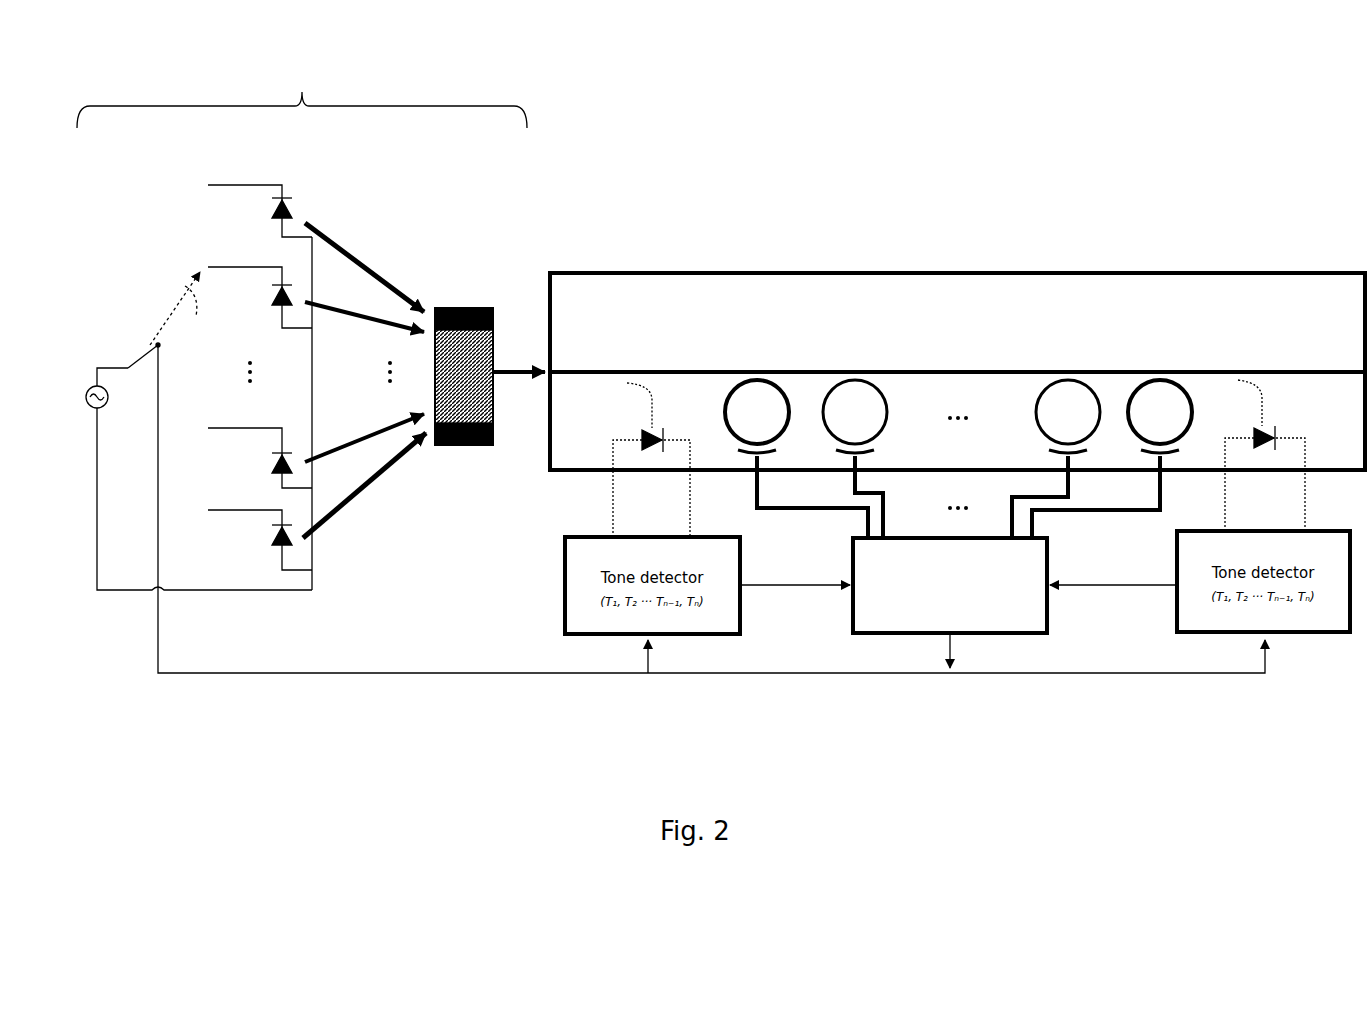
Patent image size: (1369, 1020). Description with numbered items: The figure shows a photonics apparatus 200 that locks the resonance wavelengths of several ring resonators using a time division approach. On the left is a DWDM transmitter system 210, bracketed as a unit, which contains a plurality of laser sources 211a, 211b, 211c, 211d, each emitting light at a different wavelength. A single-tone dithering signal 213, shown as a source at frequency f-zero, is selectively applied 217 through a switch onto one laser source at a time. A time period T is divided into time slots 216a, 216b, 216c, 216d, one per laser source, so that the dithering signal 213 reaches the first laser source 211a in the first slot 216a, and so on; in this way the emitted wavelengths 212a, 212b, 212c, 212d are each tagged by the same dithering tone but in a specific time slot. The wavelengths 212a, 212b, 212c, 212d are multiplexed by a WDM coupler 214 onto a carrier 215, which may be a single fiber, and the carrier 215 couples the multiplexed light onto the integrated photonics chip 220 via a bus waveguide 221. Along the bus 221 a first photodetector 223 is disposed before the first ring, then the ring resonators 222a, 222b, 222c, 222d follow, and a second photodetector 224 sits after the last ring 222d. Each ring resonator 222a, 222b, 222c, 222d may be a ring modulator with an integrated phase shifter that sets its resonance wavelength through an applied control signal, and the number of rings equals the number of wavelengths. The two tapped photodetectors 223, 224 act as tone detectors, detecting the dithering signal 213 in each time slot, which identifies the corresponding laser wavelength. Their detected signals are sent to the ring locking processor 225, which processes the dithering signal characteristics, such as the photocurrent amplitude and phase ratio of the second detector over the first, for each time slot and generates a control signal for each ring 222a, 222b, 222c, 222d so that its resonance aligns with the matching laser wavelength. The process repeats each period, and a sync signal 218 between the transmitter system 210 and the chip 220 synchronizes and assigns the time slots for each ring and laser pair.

The photonics apparatus 200 is at (1038, 92).
The DWDM transmitter system 210 is at (302, 90).
The laser source 211a is at (290, 210).
The laser source 211b is at (288, 302).
The laser source 211c is at (288, 468).
The laser source 211d is at (290, 540).
The wavelength 212a is at (340, 252).
The wavelength 212b is at (338, 320).
The wavelength 212c is at (370, 443).
The wavelength 212d is at (352, 507).
The dithering signal 213 is at (88, 388).
The WDM coupler 214 is at (470, 308).
The carrier 215 is at (515, 368).
The time slot 216a is at (210, 180).
The time slot 216b is at (210, 265).
The time slot 216c is at (210, 426).
The time slot 216d is at (210, 508).
The selective application of dithering signal 217 is at (166, 320).
The sync signal 218 is at (473, 674).
The integrated photonics chip 220 is at (833, 271).
The bus waveguide 221 is at (690, 371).
The ring resonator 222a is at (784, 394).
The ring resonator 222b is at (884, 394).
The ring resonator 222c is at (1095, 394).
The ring resonator 222d is at (1186, 394).
The first photodetector 223 is at (640, 455).
The second photodetector 224 is at (1283, 440).
The ring locking processor 225 is at (853, 628).